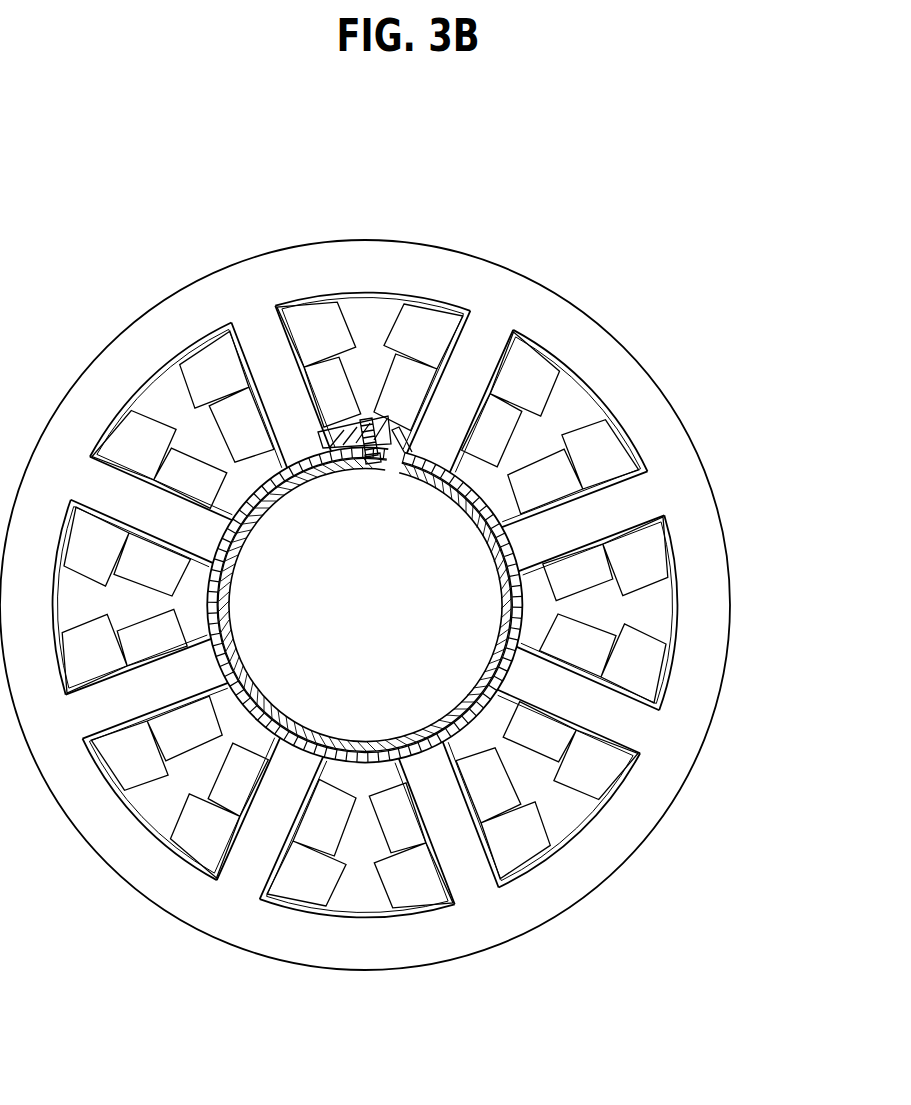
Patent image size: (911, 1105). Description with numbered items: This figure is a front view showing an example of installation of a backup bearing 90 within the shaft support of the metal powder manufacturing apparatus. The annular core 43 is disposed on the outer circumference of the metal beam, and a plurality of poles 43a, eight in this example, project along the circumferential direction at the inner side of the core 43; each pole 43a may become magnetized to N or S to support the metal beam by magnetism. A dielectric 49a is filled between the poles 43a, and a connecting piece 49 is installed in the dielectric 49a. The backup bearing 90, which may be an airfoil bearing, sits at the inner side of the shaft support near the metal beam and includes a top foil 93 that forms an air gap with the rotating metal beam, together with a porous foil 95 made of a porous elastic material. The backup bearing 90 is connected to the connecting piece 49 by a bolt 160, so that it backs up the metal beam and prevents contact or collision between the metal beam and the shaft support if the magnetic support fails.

The core 43 is at (555, 312).
The pole 43a is at (612, 510).
The connecting piece 49 is at (340, 425).
The dielectric 49a is at (590, 395).
The backup bearing 90 is at (267, 487).
The top foil 93 is at (233, 530).
The porous foil 95 is at (272, 490).
The bolt 160 is at (365, 417).